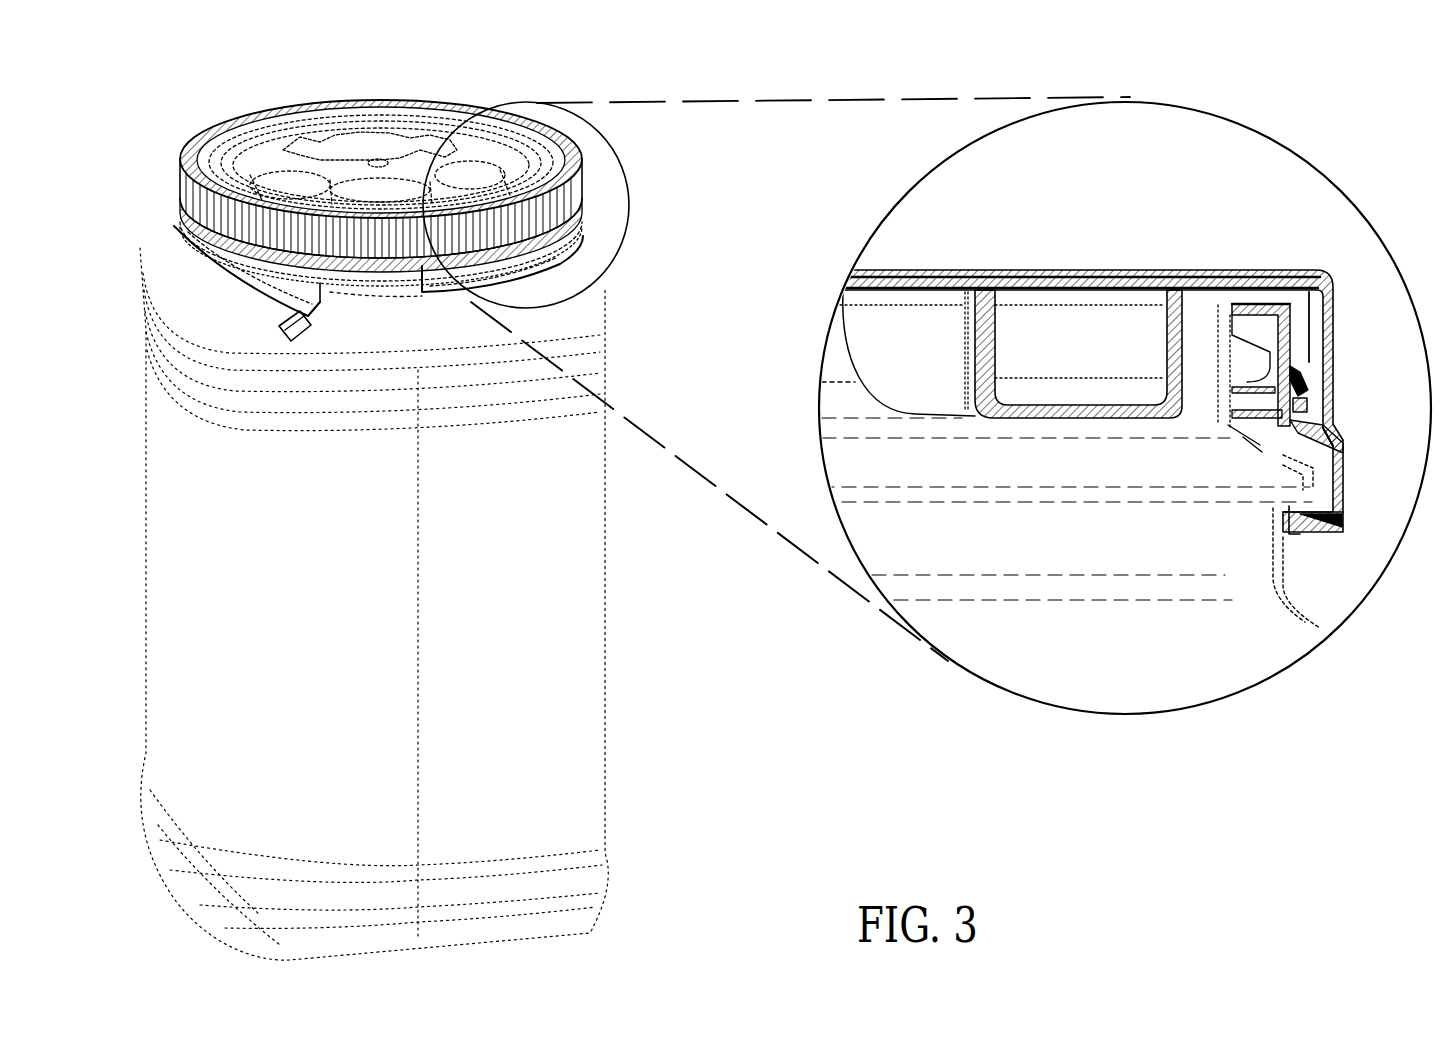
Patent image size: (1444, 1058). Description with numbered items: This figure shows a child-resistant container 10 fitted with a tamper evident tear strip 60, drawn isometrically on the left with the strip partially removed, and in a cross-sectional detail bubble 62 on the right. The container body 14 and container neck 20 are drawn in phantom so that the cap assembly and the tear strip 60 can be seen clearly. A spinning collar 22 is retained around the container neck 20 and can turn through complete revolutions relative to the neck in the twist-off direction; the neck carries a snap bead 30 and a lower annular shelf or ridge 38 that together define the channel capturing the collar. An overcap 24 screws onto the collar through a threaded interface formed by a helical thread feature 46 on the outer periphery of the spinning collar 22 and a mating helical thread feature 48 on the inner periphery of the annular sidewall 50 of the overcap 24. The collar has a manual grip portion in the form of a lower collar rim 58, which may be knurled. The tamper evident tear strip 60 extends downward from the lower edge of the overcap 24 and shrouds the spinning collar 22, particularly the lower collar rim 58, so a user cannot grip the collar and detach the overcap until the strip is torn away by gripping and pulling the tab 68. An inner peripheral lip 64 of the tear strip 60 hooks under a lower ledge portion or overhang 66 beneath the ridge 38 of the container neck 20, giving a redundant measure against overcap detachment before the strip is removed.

The child-resistant container 10 is at (190, 85).
The container body 14 is at (150, 506).
The container neck 20 is at (410, 296).
The spinning collar 22 is at (360, 283).
The overcap 24 is at (452, 106).
The snap bead 30 is at (1248, 348).
The lower annular shelf or ridge 38 is at (1262, 450).
The helical thread feature 46 is at (1296, 388).
The mating helical thread feature 48 is at (1305, 402).
The annular sidewall 50 is at (185, 192).
The lower collar rim 58 is at (1332, 446).
The tamper evident tear strip 60 is at (228, 262).
The detail bubble 62 is at (1108, 136).
The inner peripheral lip 64 is at (1340, 530).
The lower ledge portion or overhang 66 is at (1300, 522).
The tab 68 is at (283, 322).